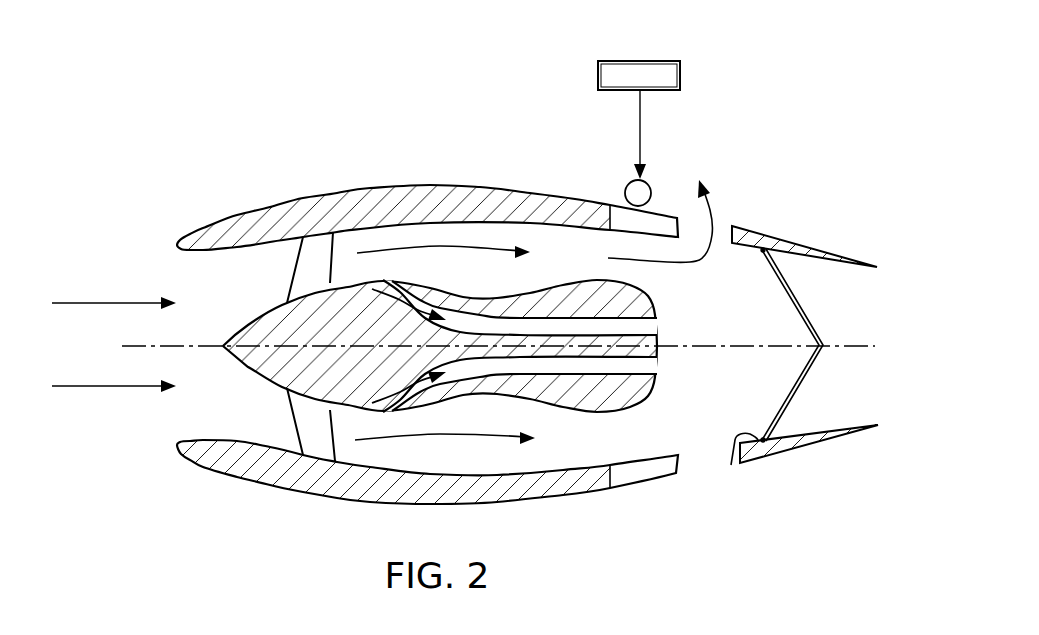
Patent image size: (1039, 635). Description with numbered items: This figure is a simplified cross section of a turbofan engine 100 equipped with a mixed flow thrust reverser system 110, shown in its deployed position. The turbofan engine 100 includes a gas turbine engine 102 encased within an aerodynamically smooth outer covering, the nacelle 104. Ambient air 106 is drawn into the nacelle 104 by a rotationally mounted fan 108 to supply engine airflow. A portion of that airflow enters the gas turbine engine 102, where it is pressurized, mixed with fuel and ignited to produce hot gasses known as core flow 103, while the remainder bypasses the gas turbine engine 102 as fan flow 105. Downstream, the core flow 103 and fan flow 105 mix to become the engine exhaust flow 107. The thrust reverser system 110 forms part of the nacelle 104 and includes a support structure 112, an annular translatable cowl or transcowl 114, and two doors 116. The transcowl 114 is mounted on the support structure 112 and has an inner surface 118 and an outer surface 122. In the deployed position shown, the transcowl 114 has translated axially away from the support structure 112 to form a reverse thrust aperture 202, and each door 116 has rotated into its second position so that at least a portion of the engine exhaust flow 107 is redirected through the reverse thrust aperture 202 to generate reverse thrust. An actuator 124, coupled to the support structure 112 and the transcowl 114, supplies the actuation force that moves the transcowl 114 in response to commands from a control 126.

The turbofan engine 100 is at (506, 132).
The gas turbine engine 102 is at (560, 284).
The core flow 103 is at (420, 298).
The nacelle 104 is at (346, 187).
The fan flow 105 is at (455, 252).
The ambient air 106 is at (125, 302).
The engine exhaust flow 107 is at (700, 268).
The fan 108 is at (320, 238).
The mixed flow thrust reverser system 110 is at (655, 115).
The support structure 112 is at (608, 212).
The transcowl 114 is at (820, 247).
The doors 116 is at (797, 297).
The inner surface 118 is at (737, 466).
The outer surface 122 is at (820, 443).
The actuator 124 is at (652, 192).
The control 126 is at (641, 61).
The reverse thrust aperture 202 is at (675, 480).